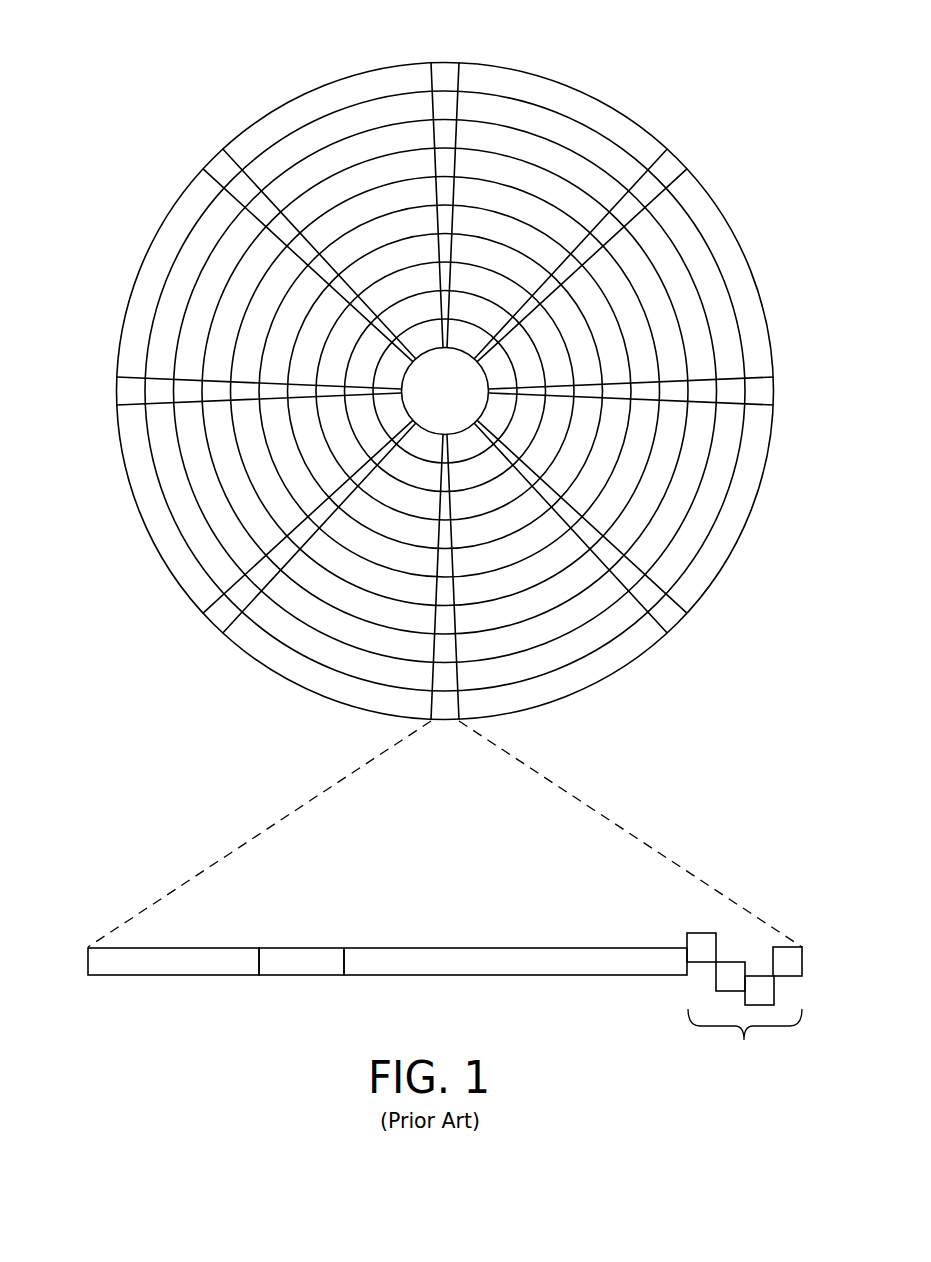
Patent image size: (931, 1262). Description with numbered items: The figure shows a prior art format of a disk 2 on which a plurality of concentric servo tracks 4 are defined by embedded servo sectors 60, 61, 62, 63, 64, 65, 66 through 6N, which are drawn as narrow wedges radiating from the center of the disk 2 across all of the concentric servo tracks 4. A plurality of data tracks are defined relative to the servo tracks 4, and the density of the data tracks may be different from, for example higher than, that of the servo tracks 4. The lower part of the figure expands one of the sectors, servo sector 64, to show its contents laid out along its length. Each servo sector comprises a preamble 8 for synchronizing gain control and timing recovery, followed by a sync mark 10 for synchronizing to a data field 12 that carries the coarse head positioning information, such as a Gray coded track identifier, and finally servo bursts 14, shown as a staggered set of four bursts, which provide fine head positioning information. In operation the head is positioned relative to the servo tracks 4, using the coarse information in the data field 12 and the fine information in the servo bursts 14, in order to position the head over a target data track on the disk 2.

The disk 2 is at (200, 67).
The servo tracks 4 is at (557, 130).
The servo sector 60 is at (445, 76).
The servo sector 61 is at (667, 167).
The servo sector 62 is at (773, 391).
The servo sector 63 is at (668, 615).
The servo sector 64 is at (297, 792).
The servo sector 65 is at (218, 618).
The servo sector 66 is at (122, 390).
The servo sector 6N is at (220, 167).
The preamble 8 is at (153, 976).
The sync mark 10 is at (298, 976).
The data field 12 is at (500, 976).
The servo bursts 14 is at (677, 915).